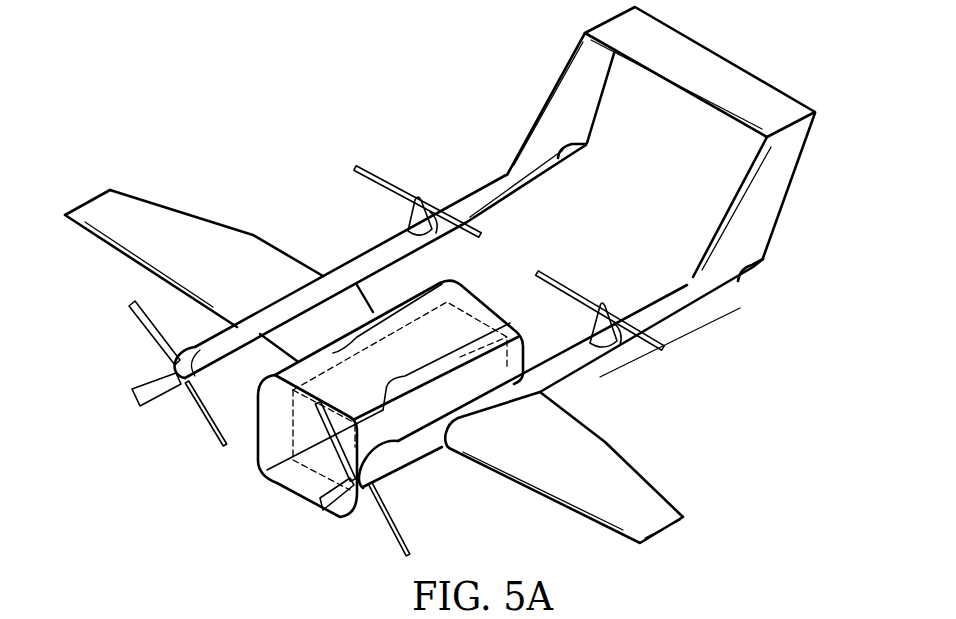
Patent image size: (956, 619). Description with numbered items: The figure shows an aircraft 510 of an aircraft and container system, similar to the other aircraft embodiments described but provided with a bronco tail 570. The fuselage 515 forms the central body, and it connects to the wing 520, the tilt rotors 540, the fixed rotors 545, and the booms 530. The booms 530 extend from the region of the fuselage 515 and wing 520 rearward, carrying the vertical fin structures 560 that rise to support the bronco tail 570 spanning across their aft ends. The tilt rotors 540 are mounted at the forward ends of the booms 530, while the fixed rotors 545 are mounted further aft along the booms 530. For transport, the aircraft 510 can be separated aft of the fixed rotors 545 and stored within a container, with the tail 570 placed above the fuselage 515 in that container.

The aircraft 510 is at (440, 288).
The fuselage 515 is at (280, 485).
The wing 520 is at (527, 497).
The booms 530 is at (372, 248).
The tilt rotors 540 is at (143, 340).
The fixed rotors 545 is at (392, 182).
The tail fin 560 is at (547, 100).
The bronco tail 570 is at (753, 72).